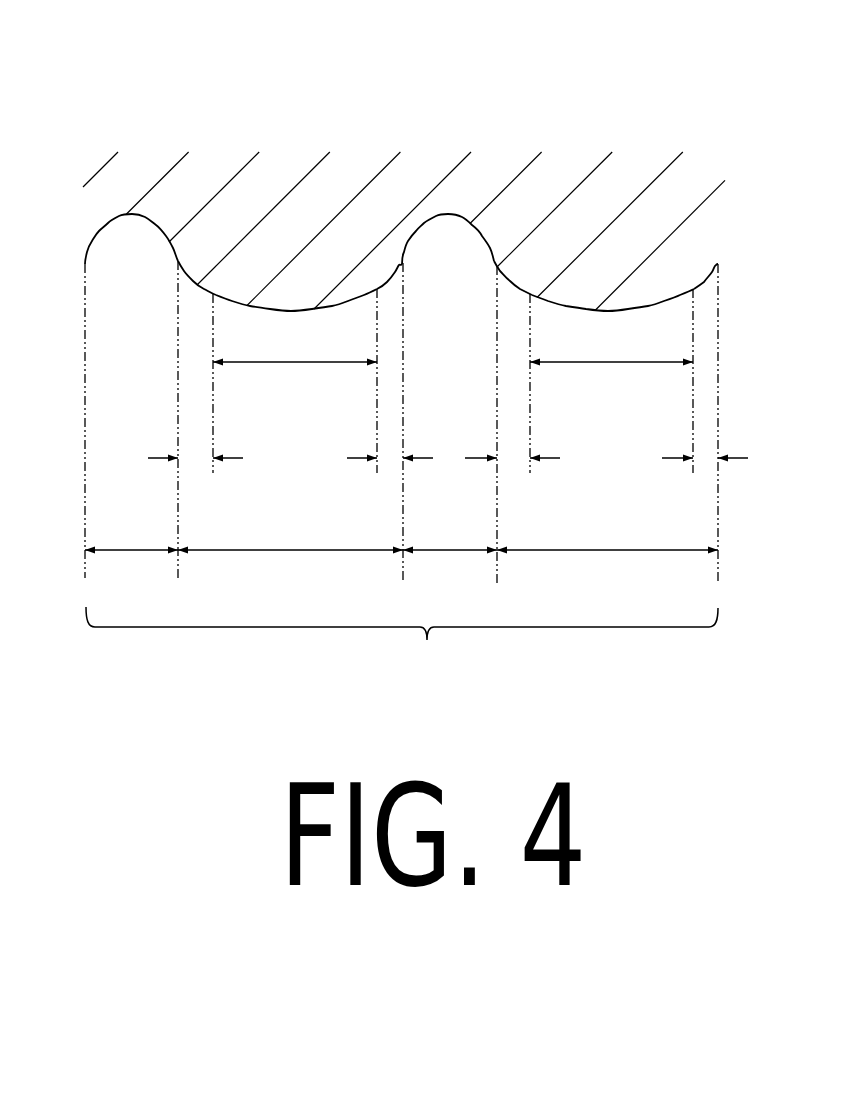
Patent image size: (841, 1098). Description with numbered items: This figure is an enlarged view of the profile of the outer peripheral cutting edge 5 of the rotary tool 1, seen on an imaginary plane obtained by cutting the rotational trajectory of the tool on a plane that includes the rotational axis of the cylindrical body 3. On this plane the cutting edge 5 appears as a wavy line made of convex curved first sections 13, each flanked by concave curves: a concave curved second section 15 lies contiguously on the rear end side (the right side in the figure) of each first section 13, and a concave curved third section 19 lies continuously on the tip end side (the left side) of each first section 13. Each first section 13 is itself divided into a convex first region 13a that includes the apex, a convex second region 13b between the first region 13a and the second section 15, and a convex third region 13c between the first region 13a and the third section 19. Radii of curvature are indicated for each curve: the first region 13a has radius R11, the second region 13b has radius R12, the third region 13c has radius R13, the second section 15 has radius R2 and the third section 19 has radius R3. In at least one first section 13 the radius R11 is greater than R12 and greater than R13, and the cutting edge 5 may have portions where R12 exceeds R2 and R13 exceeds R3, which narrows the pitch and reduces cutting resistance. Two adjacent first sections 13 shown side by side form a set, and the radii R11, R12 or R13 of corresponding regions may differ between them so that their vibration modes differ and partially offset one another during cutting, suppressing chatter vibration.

The rotary tool 1 is at (161, 122).
The body 3 is at (428, 185).
The outer peripheral cutting edge 5 is at (402, 640).
The first section 13 is at (280, 551).
The first region 13a is at (273, 363).
The second region 13b is at (757, 428).
The third region 13c is at (570, 483).
The second section 15 is at (447, 551).
The third section 19 is at (128, 551).
The radius of curvature of the second section R2 is at (448, 222).
The radius of curvature of the third section R3 is at (131, 222).
The radius of curvature of the first region R11 is at (603, 302).
The radius of curvature of the second region R12 is at (705, 277).
The radius of curvature of the third region R13 is at (508, 279).